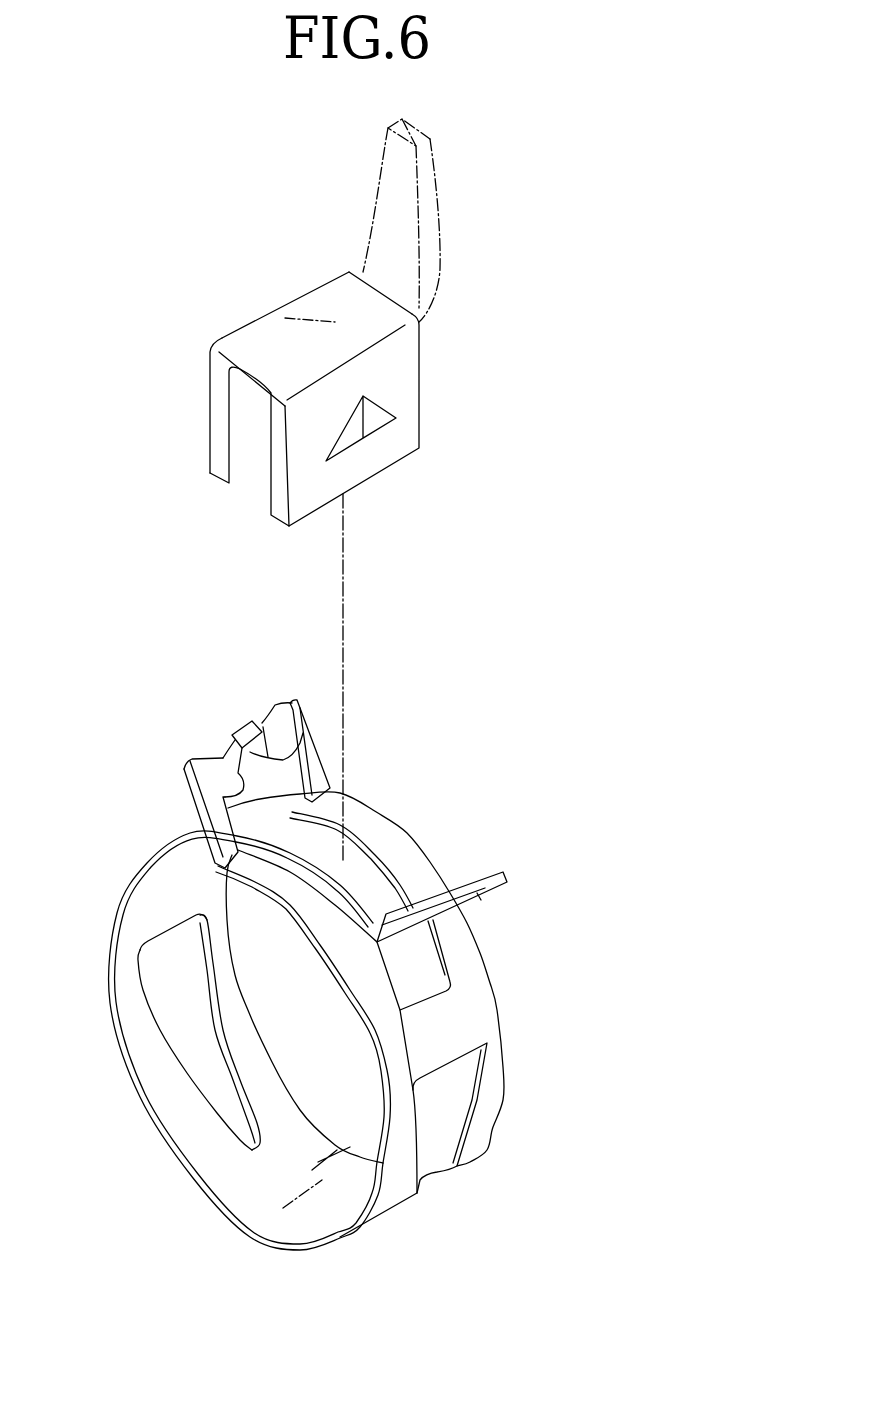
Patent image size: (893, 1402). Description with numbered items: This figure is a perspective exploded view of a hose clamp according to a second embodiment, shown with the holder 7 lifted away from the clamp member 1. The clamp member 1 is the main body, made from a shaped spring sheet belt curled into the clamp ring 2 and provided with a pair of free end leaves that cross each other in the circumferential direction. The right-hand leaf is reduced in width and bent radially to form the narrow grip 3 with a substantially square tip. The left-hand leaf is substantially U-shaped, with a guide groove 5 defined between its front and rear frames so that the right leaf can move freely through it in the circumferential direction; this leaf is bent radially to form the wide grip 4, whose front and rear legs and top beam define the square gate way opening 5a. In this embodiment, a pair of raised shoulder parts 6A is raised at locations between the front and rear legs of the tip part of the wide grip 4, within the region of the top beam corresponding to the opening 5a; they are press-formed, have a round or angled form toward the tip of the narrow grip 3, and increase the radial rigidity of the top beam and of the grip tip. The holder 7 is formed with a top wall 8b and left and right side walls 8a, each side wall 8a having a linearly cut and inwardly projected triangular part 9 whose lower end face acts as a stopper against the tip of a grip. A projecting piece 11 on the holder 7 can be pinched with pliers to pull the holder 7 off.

The clamp member 1 is at (450, 758).
The clamp ring 2 is at (262, 1208).
The narrow grip 3 is at (508, 872).
The wide grip 4 is at (248, 730).
The guide groove 5 is at (417, 975).
The gate way opening 5a is at (268, 787).
The raised shoulder parts 6A is at (295, 742).
The holder 7 is at (180, 340).
The side walls 8a is at (213, 408).
The top wall 8b is at (275, 325).
The triangular part 9 is at (372, 434).
The projecting piece 11 is at (433, 209).